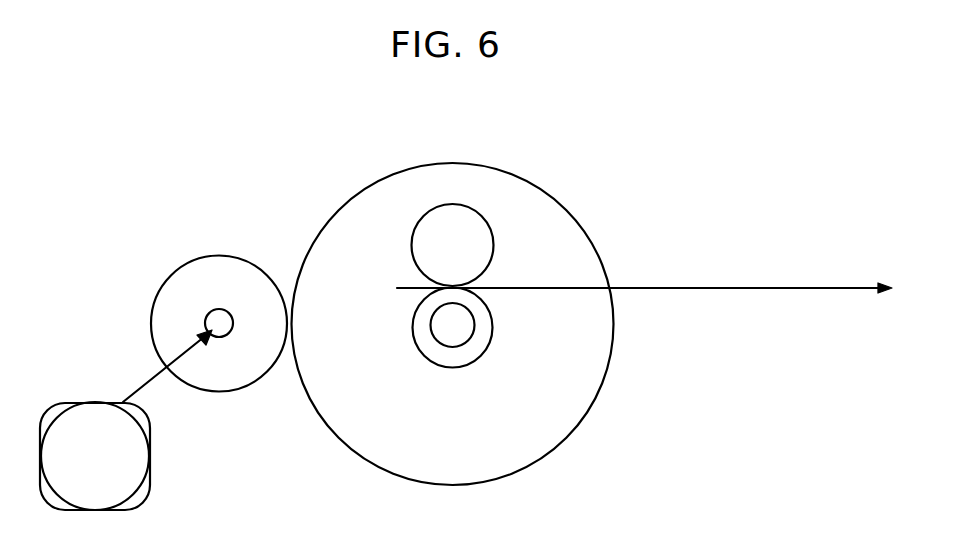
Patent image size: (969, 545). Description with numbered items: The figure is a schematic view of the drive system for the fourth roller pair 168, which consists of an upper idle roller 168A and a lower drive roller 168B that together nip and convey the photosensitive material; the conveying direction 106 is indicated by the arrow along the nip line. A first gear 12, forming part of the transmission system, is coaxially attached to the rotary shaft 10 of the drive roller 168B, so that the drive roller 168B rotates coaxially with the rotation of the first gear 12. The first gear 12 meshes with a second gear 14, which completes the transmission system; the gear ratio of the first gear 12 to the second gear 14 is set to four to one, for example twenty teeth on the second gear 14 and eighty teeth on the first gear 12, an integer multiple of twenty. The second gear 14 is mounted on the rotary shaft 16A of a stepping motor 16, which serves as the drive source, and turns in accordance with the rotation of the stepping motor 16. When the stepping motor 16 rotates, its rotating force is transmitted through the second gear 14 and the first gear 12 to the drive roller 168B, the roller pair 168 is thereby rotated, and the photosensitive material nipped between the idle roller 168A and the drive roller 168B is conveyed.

The first gear 12 is at (532, 463).
The rotary shaft 10 is at (458, 332).
The fourth roller pair 168 is at (662, 153).
The idle roller 168A is at (482, 210).
The drive roller 168B is at (492, 310).
The sheet transport direction 106 is at (755, 290).
The second gear 14 is at (245, 387).
The rotary shaft 16A is at (233, 330).
The stepping motor 16 is at (133, 468).